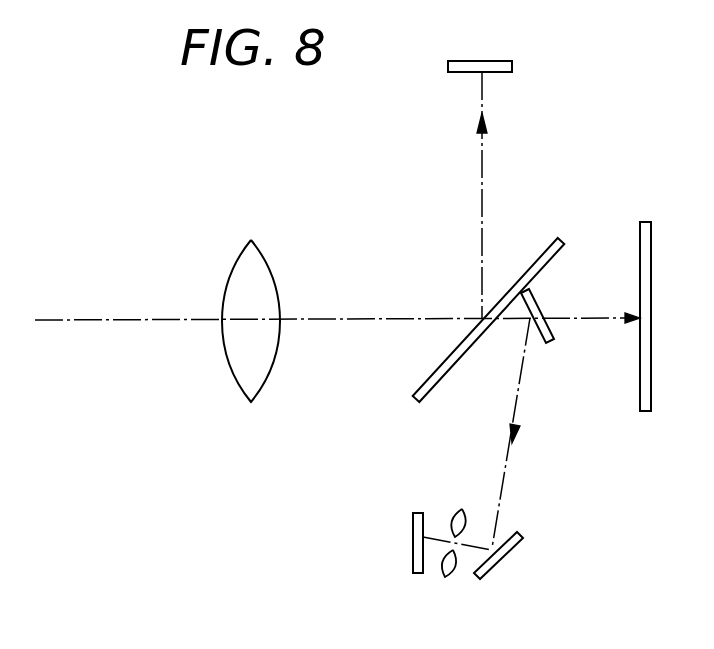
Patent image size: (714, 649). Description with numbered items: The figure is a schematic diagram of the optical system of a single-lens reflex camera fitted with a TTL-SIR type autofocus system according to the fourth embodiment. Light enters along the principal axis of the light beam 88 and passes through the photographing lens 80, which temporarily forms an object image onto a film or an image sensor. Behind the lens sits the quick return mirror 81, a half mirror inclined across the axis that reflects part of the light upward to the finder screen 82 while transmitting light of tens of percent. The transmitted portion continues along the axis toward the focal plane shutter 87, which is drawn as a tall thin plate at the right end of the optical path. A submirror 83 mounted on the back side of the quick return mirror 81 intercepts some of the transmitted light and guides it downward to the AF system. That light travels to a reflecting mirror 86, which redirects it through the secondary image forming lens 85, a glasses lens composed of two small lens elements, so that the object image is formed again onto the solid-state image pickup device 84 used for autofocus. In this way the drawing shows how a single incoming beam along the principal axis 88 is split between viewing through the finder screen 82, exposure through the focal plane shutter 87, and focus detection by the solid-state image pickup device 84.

The photographing lens 80 is at (267, 258).
The quick return mirror 81 is at (560, 237).
The finder screen 82 is at (513, 67).
The submirror 83 is at (530, 297).
The solid-state image pickup device 84 is at (413, 552).
The secondary image forming lens 85 is at (447, 577).
The reflecting mirror 86 is at (513, 552).
The focal plane shutter 87 is at (645, 411).
The principal axis of the light beam 88 is at (140, 320).